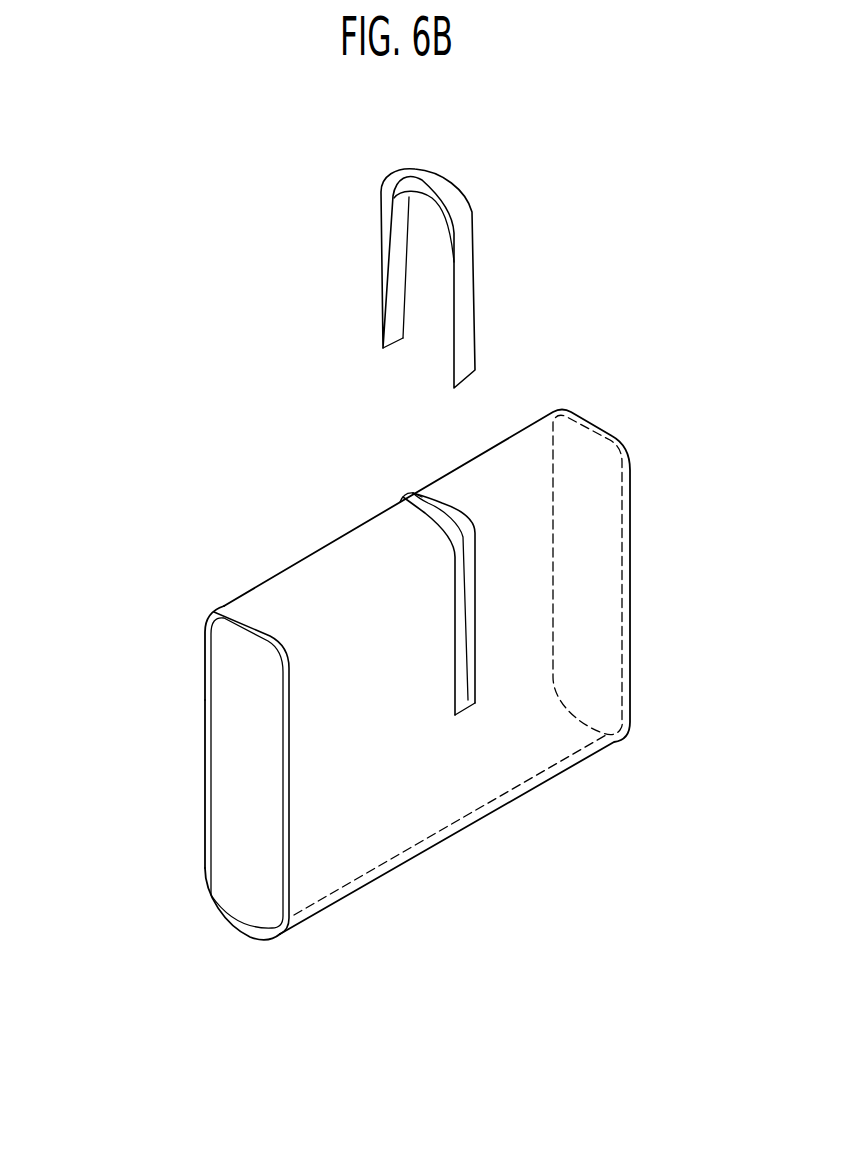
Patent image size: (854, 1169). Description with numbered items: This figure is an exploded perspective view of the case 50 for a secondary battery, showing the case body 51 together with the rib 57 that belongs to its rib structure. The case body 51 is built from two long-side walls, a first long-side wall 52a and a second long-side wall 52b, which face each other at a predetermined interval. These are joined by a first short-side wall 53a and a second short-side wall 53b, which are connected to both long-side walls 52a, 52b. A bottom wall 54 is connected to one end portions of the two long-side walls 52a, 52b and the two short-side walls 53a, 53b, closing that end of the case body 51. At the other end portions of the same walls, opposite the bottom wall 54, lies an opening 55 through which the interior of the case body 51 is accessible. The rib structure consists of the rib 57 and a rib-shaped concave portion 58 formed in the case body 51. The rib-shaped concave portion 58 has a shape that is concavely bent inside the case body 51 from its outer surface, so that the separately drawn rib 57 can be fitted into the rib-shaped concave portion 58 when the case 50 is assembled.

The case for secondary battery 50 is at (402, 645).
The case body 51 is at (428, 645).
The first long-side wall 52a is at (205, 770).
The second long-side wall 52b is at (313, 785).
The first short-side wall 53a is at (248, 600).
The second short-side wall 53b is at (238, 923).
The bottom wall 54 is at (630, 597).
The opening 55 is at (240, 692).
The rib 57 is at (425, 180).
The rib-shaped concave portion 58 is at (408, 497).